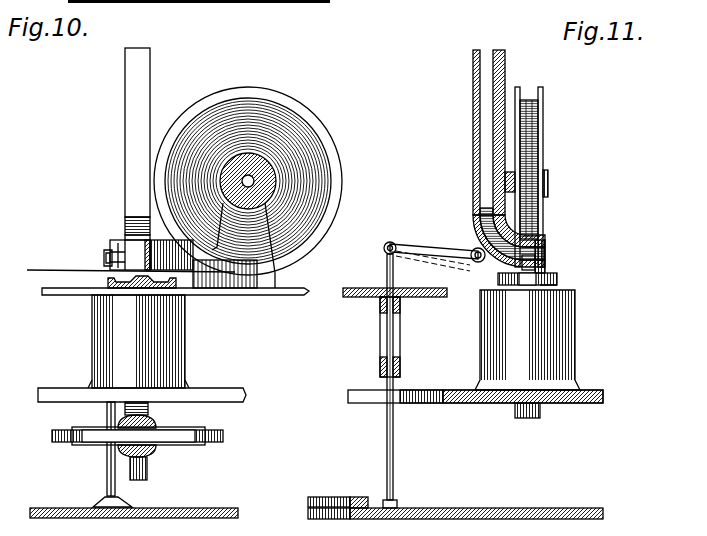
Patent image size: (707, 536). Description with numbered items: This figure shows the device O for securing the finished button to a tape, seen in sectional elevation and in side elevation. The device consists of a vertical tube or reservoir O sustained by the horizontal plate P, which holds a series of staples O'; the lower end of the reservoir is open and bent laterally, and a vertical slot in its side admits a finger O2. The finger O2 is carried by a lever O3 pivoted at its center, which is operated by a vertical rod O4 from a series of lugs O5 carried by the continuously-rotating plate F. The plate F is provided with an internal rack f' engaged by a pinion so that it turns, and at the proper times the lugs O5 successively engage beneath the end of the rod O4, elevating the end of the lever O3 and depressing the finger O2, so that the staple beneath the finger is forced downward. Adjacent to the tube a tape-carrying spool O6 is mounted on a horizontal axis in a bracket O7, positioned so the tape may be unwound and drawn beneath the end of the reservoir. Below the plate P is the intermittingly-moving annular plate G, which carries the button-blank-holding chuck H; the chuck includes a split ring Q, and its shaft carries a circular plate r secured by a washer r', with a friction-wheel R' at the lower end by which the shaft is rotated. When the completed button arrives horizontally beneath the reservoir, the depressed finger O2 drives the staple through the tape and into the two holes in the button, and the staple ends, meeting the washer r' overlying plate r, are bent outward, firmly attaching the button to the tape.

In FIG. 10, the vertical tube or reservoir O is at (123, 159).
In FIG. 11, the vertical tube or reservoir O is at (497, 158).
In FIG. 11, the staples O' is at (496, 226).
In FIG. 10, the finger O2 is at (104, 262).
In FIG. 11, the finger O2 is at (547, 251).
In FIG. 10, the lever O3 is at (106, 406).
In FIG. 11, the lever O3 is at (449, 248).
In FIG. 11, the vertical rod O4 is at (388, 262).
In FIG. 10, the lugs O5 is at (131, 504).
In FIG. 11, the lugs O5 is at (400, 503).
In FIG. 10, the tape-carrying spool O6 is at (192, 107).
In FIG. 11, the tape-carrying spool O6 is at (549, 143).
In FIG. 10, the bracket O7 is at (261, 283).
In FIG. 10, the horizontal plate P is at (292, 284).
In FIG. 10, the washer r' is at (142, 294).
In FIG. 11, the circular plate r is at (568, 292).
In FIG. 10, the button-blank-holding chuck H is at (188, 339).
In FIG. 11, the button-blank-holding chuck H is at (470, 337).
In FIG. 10, the intermittingly-moving annular plate G is at (144, 385).
In FIG. 11, the intermittingly-moving annular plate G is at (475, 393).
In FIG. 10, the friction-wheel R' is at (148, 441).
In FIG. 10, the continuously-rotating plate F is at (236, 500).
In FIG. 11, the continuously-rotating plate F is at (480, 502).
In FIG. 11, the internal rack f' is at (338, 495).
In FIG. 11, the split ring Q is at (558, 279).